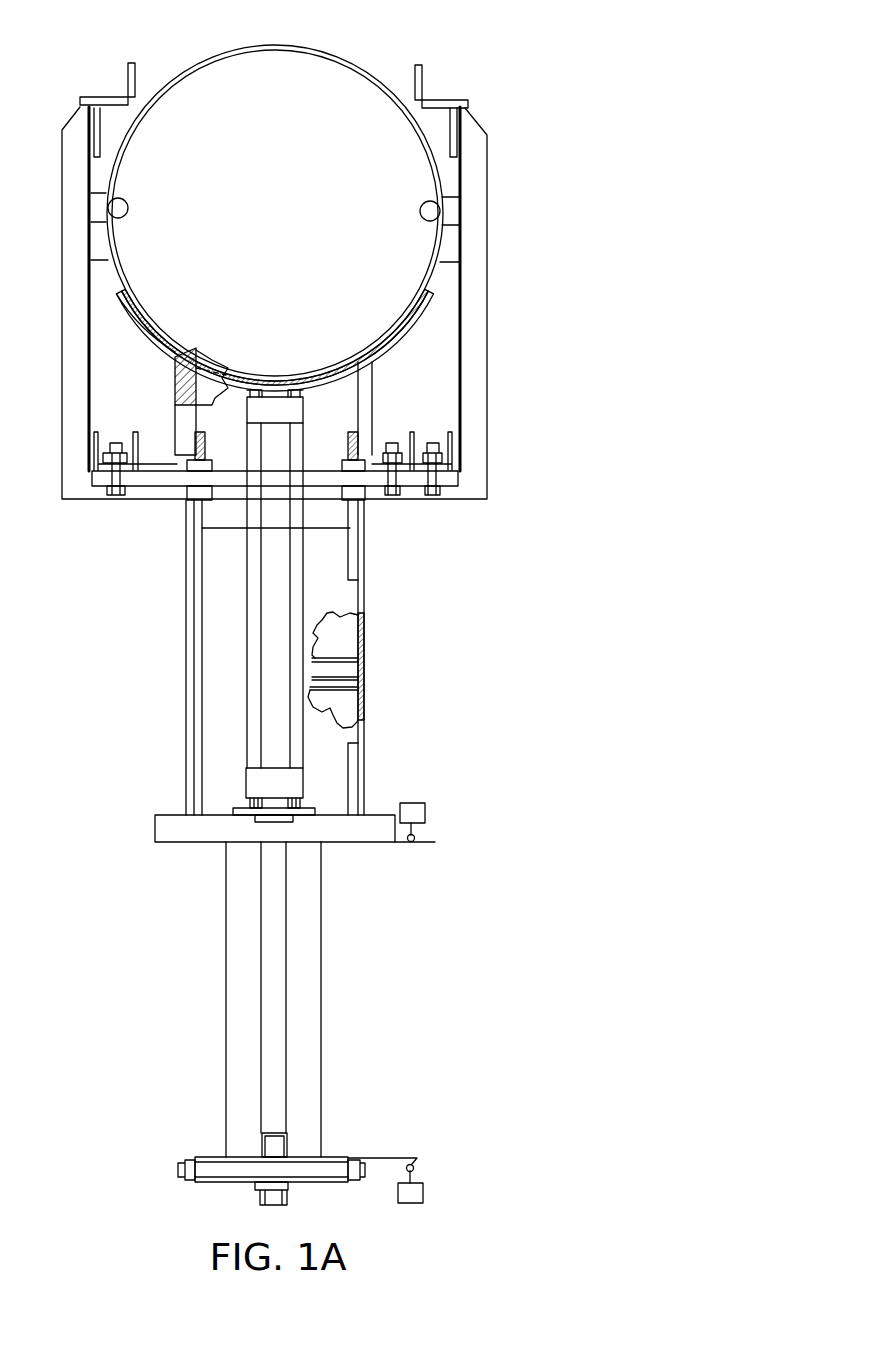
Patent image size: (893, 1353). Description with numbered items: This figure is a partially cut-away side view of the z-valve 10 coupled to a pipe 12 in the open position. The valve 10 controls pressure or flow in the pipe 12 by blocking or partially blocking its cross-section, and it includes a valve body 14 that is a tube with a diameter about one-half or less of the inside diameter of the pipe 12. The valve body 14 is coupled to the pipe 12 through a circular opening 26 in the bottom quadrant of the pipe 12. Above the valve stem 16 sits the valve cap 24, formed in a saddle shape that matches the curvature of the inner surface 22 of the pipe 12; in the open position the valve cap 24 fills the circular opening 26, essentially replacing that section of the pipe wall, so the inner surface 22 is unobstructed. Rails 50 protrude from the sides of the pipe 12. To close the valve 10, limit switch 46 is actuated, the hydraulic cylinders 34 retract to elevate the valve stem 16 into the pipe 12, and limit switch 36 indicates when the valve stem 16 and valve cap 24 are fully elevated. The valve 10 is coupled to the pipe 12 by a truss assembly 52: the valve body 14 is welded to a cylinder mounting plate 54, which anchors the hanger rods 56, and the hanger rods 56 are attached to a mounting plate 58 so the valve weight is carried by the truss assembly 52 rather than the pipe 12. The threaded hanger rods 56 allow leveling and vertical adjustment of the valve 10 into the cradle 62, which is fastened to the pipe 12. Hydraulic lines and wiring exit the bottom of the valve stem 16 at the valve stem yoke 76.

The valve 10 is at (136, 632).
The pipe 12 is at (347, 58).
The valve body 14 is at (372, 700).
The valve stem 16 is at (326, 930).
The inner surface 22 is at (132, 157).
The valve cap 24 is at (202, 350).
The circular opening 26 is at (289, 352).
The hydraulic cylinders 34 is at (305, 728).
The limit switch 36 is at (428, 812).
The limit switch 46 is at (425, 1190).
The rails 50 is at (424, 222).
The truss assembly 52 is at (497, 292).
The cylinder mounting plate 54 is at (160, 838).
The hanger rods 56 is at (360, 527).
The mounting plate 58 is at (150, 480).
The cradle 62 is at (137, 332).
The valve stem yoke 76 is at (341, 1152).